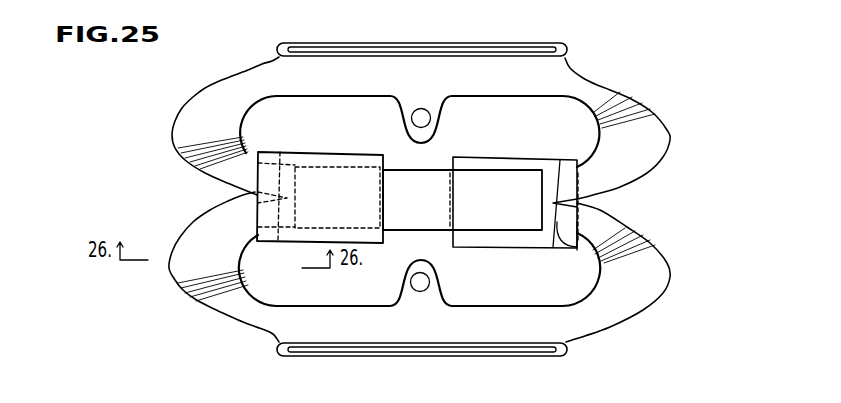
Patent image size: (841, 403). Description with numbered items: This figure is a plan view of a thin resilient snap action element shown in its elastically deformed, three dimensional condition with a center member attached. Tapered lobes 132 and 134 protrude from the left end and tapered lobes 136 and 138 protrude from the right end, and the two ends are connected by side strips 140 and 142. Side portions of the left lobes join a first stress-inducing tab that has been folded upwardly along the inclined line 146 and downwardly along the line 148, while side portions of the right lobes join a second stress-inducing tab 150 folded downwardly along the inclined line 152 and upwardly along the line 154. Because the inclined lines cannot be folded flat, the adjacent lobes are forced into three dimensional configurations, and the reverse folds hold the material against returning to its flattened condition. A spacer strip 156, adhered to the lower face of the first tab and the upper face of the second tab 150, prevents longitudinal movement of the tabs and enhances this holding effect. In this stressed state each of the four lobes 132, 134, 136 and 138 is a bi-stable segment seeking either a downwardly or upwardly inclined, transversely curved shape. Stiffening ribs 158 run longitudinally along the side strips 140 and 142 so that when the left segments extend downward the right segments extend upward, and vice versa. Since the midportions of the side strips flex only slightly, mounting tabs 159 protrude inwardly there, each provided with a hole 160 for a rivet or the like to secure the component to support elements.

The tapered lobe 132 is at (187, 117).
The tapered lobe 134 is at (186, 288).
The tapered lobe 136 is at (663, 143).
The tapered lobe 138 is at (653, 278).
The side strip 140 is at (417, 70).
The side strip 142 is at (383, 43).
The fold line 146 is at (286, 196).
The fold line 148 is at (253, 153).
The second stress-inducing tab 150 is at (512, 163).
The fold line 152 is at (570, 255).
The fold line 154 is at (583, 162).
The spacer strip 156 is at (441, 209).
The stiffening rib 158 is at (330, 50).
The mounting tab 159 is at (448, 126).
The hole 160 is at (420, 288).